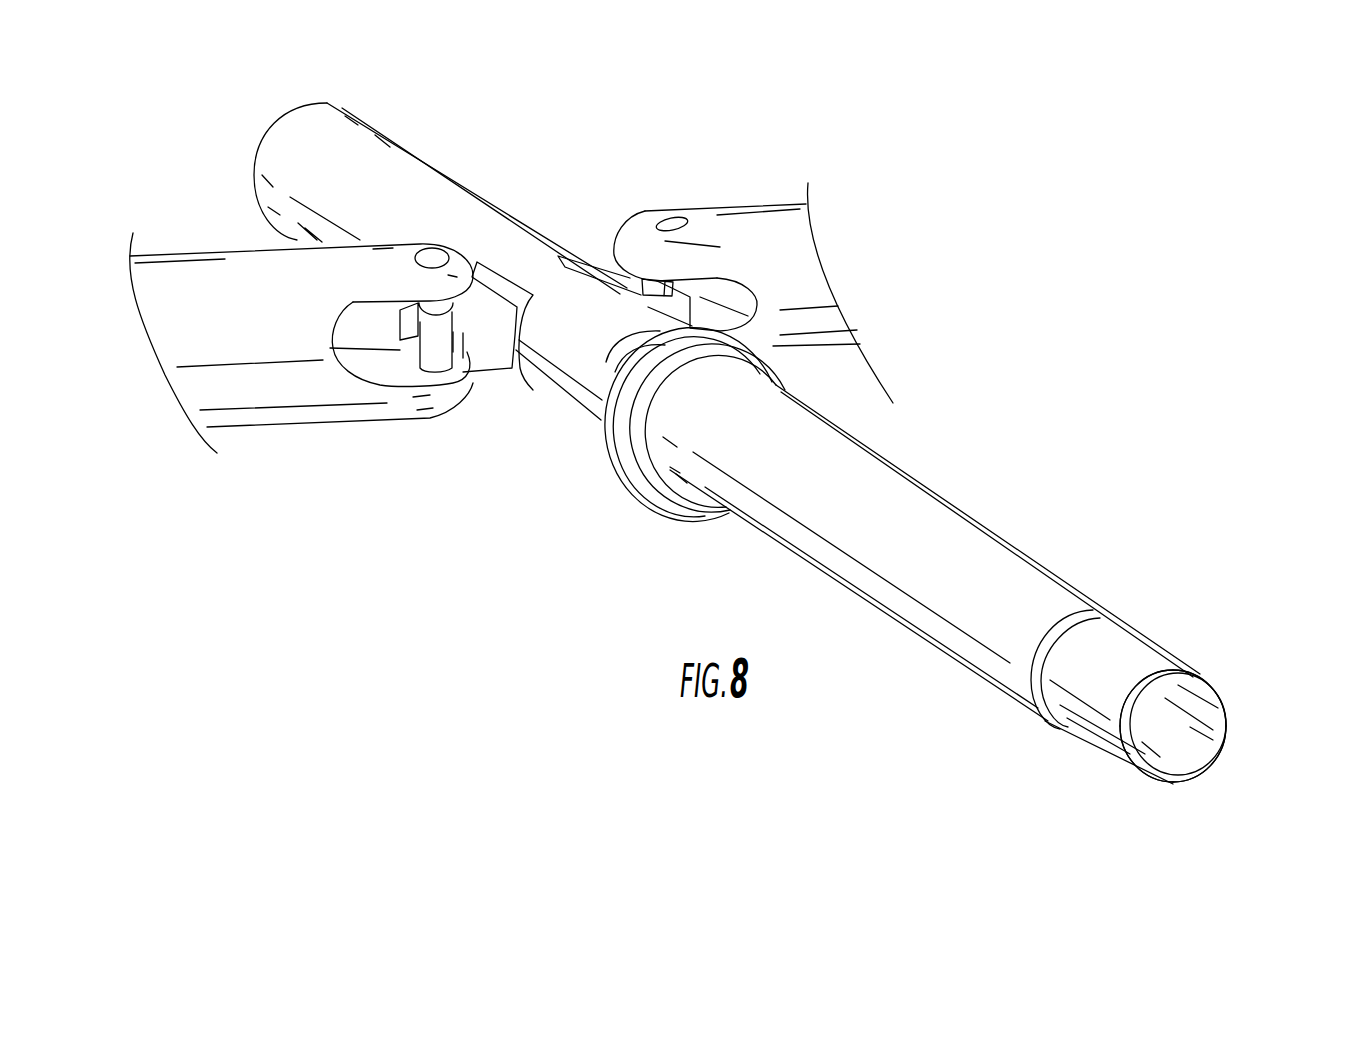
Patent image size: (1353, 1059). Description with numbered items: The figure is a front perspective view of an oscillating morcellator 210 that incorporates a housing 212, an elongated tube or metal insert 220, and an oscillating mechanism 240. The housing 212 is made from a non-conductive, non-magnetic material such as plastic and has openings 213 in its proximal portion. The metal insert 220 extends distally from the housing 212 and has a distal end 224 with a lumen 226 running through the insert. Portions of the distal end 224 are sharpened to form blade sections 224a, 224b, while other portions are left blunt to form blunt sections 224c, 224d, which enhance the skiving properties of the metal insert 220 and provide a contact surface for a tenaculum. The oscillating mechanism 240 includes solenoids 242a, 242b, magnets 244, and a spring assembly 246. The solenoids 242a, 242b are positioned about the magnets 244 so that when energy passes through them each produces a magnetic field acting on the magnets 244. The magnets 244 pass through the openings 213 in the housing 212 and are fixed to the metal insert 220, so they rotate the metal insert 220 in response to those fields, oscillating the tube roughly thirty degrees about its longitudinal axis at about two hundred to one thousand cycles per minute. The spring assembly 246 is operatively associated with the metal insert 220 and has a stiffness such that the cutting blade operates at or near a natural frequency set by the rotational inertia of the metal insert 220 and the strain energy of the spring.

The oscillating morcellator 210 is at (922, 145).
The housing 212 is at (907, 493).
The openings 213 is at (570, 263).
The metal insert 220 is at (1177, 657).
The distal end 224 is at (1156, 737).
The blade section 224a is at (1123, 740).
The blade section 224b is at (1227, 723).
The blunt section 224c is at (1190, 673).
The blunt section 224d is at (1177, 780).
The lumen 226 is at (1150, 742).
The oscillating mechanism 240 is at (600, 180).
The solenoid 242a is at (223, 295).
The solenoid 242b is at (737, 214).
The magnets 244 is at (647, 298).
The spring assembly 246 is at (603, 430).